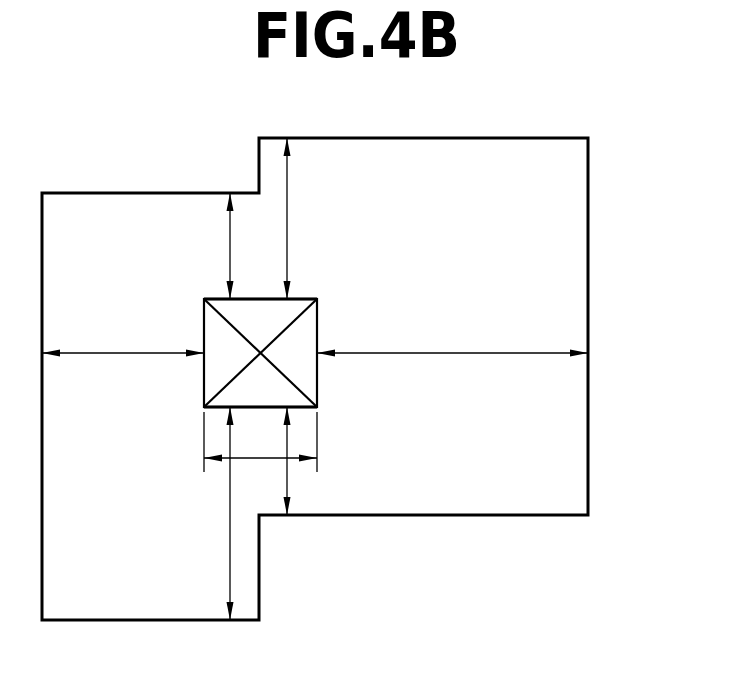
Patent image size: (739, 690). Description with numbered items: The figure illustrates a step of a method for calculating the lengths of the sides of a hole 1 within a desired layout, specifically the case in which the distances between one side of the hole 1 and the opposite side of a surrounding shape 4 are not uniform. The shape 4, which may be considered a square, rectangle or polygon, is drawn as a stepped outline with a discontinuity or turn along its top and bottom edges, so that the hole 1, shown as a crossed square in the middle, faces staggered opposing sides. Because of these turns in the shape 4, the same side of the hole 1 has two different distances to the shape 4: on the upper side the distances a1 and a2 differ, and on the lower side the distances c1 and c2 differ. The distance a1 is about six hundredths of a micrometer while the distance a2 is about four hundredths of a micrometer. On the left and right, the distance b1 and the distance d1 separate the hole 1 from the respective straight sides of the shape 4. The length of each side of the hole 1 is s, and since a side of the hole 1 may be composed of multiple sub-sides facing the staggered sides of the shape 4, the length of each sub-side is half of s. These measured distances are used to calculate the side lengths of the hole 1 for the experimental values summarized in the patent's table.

The shape 4 is at (525, 138).
The hole 1 is at (317, 317).
The length of each side of the hole s is at (260, 458).
The distance a1 is at (309, 218).
The distance a2 is at (207, 246).
The distance b1 is at (123, 336).
The distance c1 is at (208, 513).
The distance c2 is at (310, 461).
The distance d1 is at (452, 333).